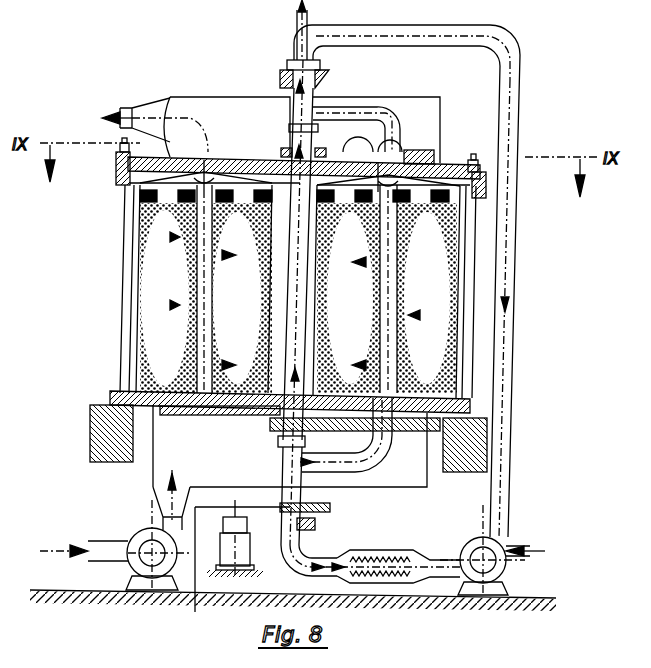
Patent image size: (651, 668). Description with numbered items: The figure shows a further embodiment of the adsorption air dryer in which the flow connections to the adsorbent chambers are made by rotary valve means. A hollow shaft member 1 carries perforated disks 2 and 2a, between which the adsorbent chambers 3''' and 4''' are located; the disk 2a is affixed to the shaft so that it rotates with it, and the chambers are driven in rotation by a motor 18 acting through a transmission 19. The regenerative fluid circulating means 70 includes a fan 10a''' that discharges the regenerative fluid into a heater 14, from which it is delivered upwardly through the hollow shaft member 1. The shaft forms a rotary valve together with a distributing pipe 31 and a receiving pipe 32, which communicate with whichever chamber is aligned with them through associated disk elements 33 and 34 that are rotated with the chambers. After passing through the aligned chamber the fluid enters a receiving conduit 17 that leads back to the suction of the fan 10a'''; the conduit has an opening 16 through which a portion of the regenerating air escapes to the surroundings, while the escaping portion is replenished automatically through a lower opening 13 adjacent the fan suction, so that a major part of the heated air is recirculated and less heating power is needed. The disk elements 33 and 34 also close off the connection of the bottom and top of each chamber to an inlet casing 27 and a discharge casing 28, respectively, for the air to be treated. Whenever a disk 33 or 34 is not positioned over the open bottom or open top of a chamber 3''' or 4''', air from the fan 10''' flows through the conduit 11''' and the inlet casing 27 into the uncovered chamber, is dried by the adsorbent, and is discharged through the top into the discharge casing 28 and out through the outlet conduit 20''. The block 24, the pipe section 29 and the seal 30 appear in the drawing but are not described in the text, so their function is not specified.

The hollow shaft member 1 is at (302, 302).
The perforated disk 2 is at (470, 409).
The perforated disk 2a is at (487, 190).
The chamber 3''' is at (206, 289).
The chamber 4''' is at (387, 289).
The fan 10''' is at (115, 545).
The fan 10a''' is at (532, 550).
The conduit 11''' is at (115, 506).
The lower opening 13 is at (507, 553).
The heater 14 is at (405, 553).
The opening 16 is at (296, 17).
The receiving conduit 17 is at (348, 38).
The motor 18 is at (223, 572).
The transmission 19 is at (235, 572).
The outlet conduit 20'' is at (124, 86).
The support block 24 is at (475, 440).
The inlet casing 27 is at (160, 470).
The discharge casing 28 is at (187, 97).
The lower pipe section 29 is at (302, 500).
The pipe seal 30 is at (290, 62).
The distributing pipe 31 is at (378, 478).
The receiving pipe 32 is at (376, 110).
The disk element 33 is at (415, 440).
The disk element 34 is at (428, 150).
The regenerative fluid circulating means 70 is at (512, 347).